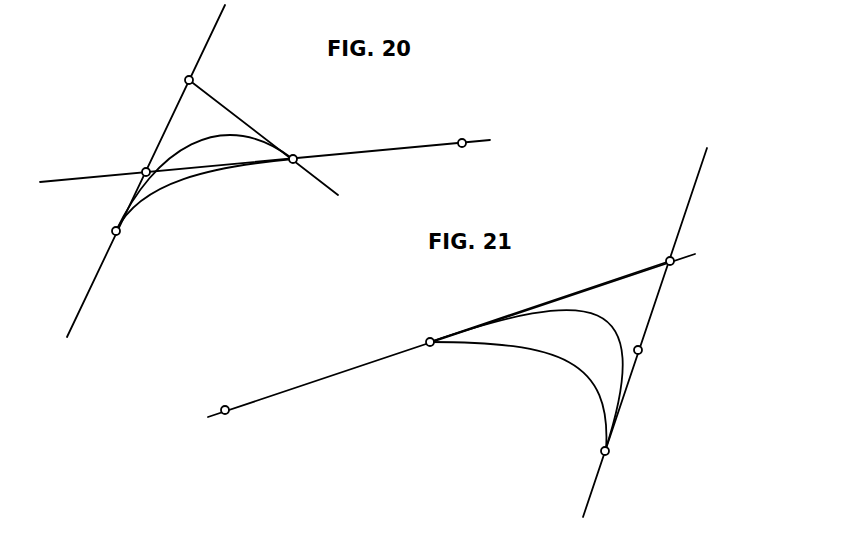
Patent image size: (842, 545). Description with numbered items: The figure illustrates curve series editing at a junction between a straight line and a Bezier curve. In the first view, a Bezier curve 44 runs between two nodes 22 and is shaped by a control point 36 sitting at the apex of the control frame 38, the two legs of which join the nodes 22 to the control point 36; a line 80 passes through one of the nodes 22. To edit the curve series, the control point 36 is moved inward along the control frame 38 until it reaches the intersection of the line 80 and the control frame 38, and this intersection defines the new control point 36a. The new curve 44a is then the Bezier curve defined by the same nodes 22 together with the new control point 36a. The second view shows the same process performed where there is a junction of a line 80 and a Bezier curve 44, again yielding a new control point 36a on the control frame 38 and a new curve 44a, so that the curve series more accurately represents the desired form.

In FIG. 20, the node 22 is at (111, 233).
In FIG. 21, the node 22 is at (430, 337).
In FIG. 20, the control point 36 is at (183, 75).
In FIG. 21, the control point 36 is at (643, 353).
In FIG. 20, the new control point 36a is at (142, 168).
In FIG. 21, the new control point 36a is at (701, 252).
In FIG. 20, the control frame 38 is at (177, 107).
In FIG. 21, the control frame 38 is at (620, 277).
In FIG. 20, the Bezier curve 44 is at (198, 148).
In FIG. 21, the Bezier curve 44 is at (572, 360).
In FIG. 20, the new curve 44a is at (207, 177).
In FIG. 21, the new curve 44a is at (613, 328).
In FIG. 20, the line 80 is at (378, 151).
In FIG. 21, the line 80 is at (327, 375).